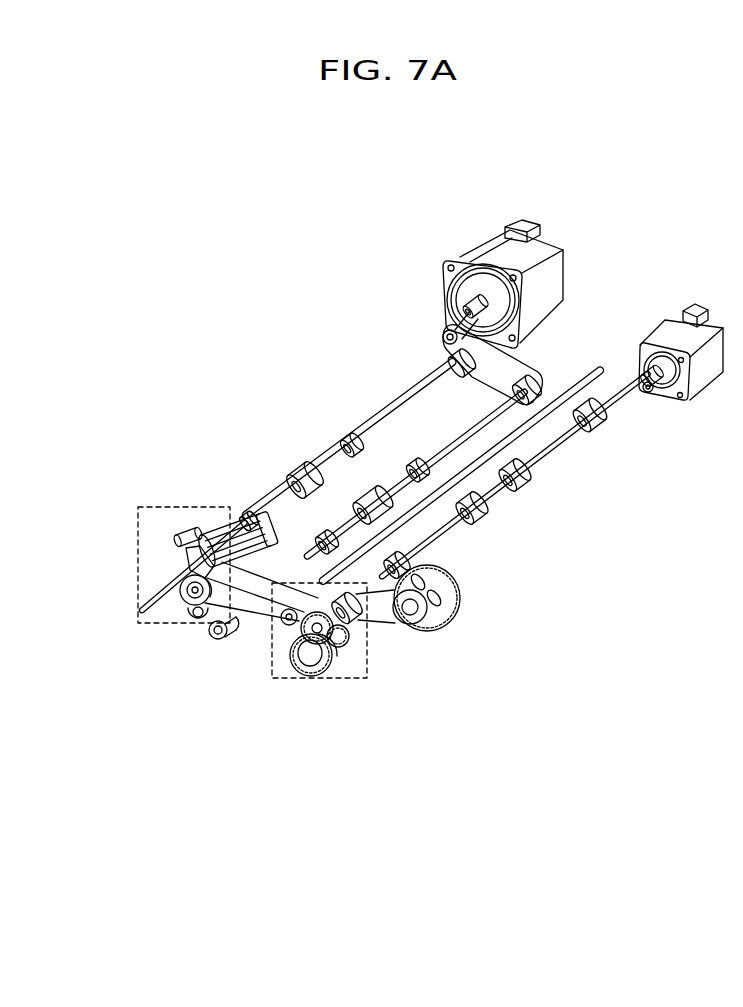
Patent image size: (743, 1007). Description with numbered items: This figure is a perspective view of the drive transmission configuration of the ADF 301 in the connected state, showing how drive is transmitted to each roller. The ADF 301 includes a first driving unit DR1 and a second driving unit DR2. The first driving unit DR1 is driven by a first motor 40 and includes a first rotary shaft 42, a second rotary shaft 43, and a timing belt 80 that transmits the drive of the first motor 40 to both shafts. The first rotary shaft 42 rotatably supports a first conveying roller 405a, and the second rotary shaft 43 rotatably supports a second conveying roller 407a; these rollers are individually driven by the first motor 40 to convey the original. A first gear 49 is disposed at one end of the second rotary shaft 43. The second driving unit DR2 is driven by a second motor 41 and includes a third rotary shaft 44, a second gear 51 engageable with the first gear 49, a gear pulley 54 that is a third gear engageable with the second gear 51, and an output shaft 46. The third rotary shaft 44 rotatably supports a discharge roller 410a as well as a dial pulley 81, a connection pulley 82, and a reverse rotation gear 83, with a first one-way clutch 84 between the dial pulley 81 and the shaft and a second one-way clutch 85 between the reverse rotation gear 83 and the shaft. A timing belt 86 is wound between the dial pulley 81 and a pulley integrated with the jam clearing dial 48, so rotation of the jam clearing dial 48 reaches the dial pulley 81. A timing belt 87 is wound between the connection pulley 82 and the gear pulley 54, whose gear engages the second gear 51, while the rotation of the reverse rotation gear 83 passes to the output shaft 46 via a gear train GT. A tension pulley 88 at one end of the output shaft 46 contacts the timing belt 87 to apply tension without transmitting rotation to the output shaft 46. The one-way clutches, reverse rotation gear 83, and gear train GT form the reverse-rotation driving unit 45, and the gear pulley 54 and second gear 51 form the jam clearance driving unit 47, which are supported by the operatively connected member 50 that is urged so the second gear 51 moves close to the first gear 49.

The ADF 301 is at (259, 134).
The first motor 40 is at (524, 220).
The second motor 41 is at (697, 305).
The first rotary shaft 42 is at (400, 396).
The second rotary shaft 43 is at (398, 483).
The third rotary shaft 44 is at (545, 462).
The output shaft 46 is at (600, 379).
The first conveying roller 405a is at (303, 467).
The second conveying roller 407a is at (362, 492).
The discharge roller 410a is at (489, 513).
The timing belt 80 is at (522, 363).
The timing belt 86 is at (446, 566).
The jam clearing dial 48 is at (451, 623).
The reverse-rotation driving unit 45 is at (329, 676).
The gear train GT is at (311, 690).
The dial pulley 81 is at (384, 621).
The connection pulley 82 is at (348, 646).
The reverse rotation gear 83 is at (331, 645).
The first one-way clutch 84 is at (352, 622).
The second one-way clutch 85 is at (333, 677).
The tension pulley 88 is at (286, 625).
The timing belt 87 is at (268, 627).
The jam clearance driving unit 47 is at (189, 573).
The operatively connected member 50 is at (226, 526).
The first gear 49 is at (211, 642).
The second gear 51 is at (176, 631).
The gear pulley 54 is at (174, 610).
The first driving unit DR1 is at (289, 313).
The second driving unit DR2 is at (634, 478).